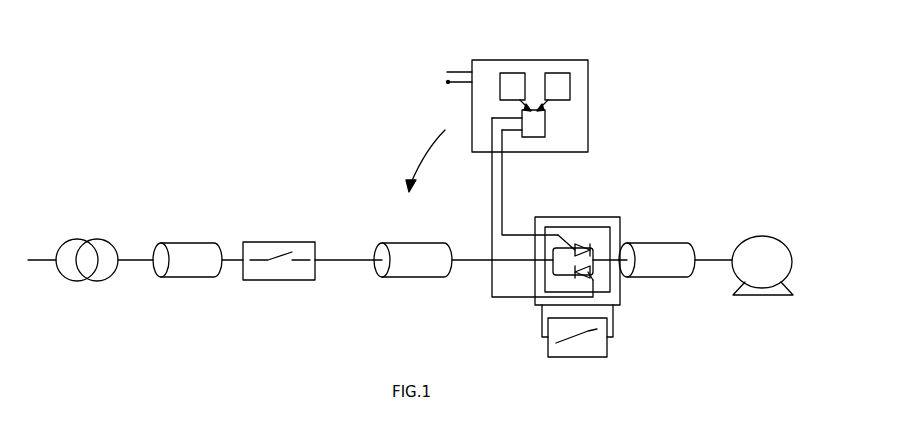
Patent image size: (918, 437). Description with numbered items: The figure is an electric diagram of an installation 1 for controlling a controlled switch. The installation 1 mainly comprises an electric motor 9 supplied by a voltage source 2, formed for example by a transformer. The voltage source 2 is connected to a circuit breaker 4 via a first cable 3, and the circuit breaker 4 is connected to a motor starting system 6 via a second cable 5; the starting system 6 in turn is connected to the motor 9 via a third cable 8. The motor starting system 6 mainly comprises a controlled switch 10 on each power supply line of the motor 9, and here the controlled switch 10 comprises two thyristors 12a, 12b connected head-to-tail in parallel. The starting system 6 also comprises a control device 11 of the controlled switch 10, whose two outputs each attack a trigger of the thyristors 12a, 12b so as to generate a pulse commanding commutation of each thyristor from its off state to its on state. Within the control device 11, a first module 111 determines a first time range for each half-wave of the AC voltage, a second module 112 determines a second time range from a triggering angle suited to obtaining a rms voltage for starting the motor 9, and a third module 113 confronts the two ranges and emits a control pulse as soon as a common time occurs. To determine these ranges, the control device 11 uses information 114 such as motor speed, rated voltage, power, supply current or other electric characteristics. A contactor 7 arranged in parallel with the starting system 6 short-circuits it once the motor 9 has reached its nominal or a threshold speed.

The installation 1 is at (431, 154).
The voltage source 2 is at (80, 282).
The first cable 3 is at (188, 243).
The circuit breaker 4 is at (268, 242).
The second cable 5 is at (400, 243).
The motor starting system 6 is at (620, 230).
The contactor 7 is at (548, 347).
The third cable 8 is at (668, 243).
The electric motor 9 is at (762, 236).
The controlled switch 10 is at (612, 280).
The control device 11 is at (588, 105).
The thyristor 12a is at (575, 246).
The thyristor 12b is at (572, 278).
The first module 111 is at (512, 73).
The second module 112 is at (570, 85).
The third module 113 is at (545, 125).
The information 114 is at (455, 72).